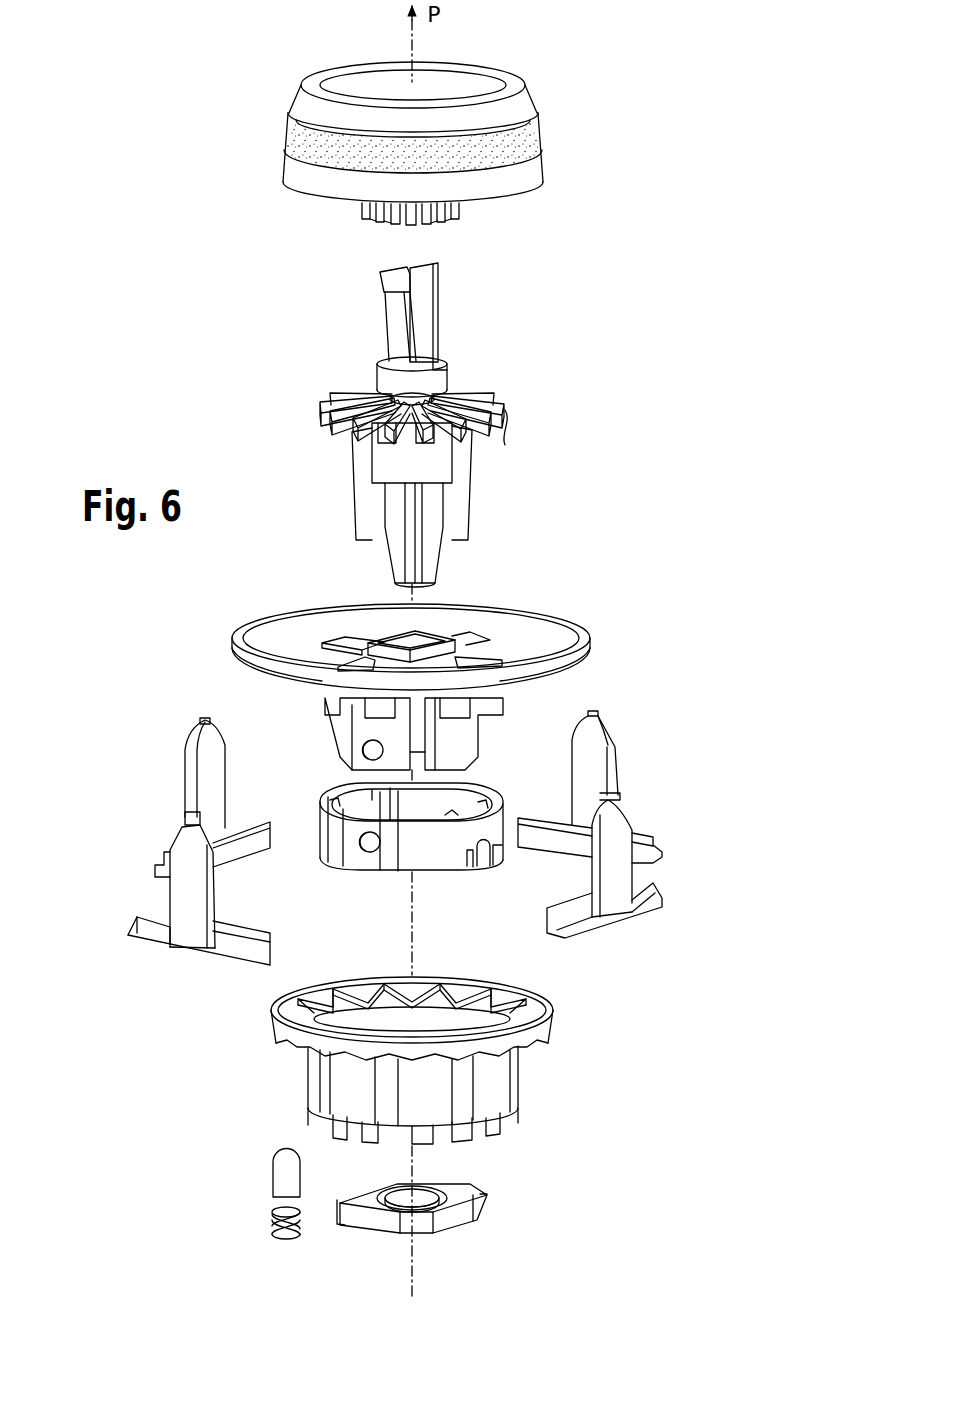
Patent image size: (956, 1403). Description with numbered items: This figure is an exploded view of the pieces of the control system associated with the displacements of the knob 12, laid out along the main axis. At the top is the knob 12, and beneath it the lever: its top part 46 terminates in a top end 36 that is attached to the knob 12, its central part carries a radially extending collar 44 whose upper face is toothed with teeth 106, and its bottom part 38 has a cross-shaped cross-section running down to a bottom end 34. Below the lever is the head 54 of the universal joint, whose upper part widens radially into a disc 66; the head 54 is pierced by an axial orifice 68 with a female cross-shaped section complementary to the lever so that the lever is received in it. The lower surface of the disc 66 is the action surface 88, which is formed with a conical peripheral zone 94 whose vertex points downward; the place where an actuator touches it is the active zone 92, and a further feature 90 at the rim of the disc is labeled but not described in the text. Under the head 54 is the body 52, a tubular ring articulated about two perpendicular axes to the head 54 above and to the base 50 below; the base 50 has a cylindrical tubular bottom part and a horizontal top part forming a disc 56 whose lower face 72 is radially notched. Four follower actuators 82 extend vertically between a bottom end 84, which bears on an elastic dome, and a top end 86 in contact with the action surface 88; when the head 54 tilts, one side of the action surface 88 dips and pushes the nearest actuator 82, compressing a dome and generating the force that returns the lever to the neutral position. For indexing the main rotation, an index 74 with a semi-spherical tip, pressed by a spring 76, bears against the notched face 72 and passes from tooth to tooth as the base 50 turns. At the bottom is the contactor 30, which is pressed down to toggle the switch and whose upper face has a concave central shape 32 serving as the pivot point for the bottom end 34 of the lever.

The knob 12 is at (535, 132).
The top end 36 is at (438, 278).
The top part 46 is at (438, 313).
The collar 44 is at (487, 412).
The teeth 106 is at (497, 452).
The bottom part 38 is at (452, 518).
The bottom end 34 is at (443, 580).
The axial orifice 68 is at (350, 643).
The disc 66 is at (523, 650).
The conical peripheral zone 94 is at (573, 662).
The disc edge 90 is at (540, 692).
The action surface 88 is at (270, 671).
The active zone 92 is at (302, 684).
The head 54 is at (467, 743).
The body 52 is at (495, 825).
The top end 86 is at (198, 718).
The follower actuator 82 is at (176, 898).
The bottom end 84 is at (193, 955).
The disc 56 is at (535, 1033).
The notched face 72 is at (292, 1044).
The base 50 is at (497, 1085).
The index 74 is at (285, 1173).
The spring 76 is at (272, 1213).
The concave central shape 32 is at (433, 1183).
The contactor 30 is at (460, 1212).